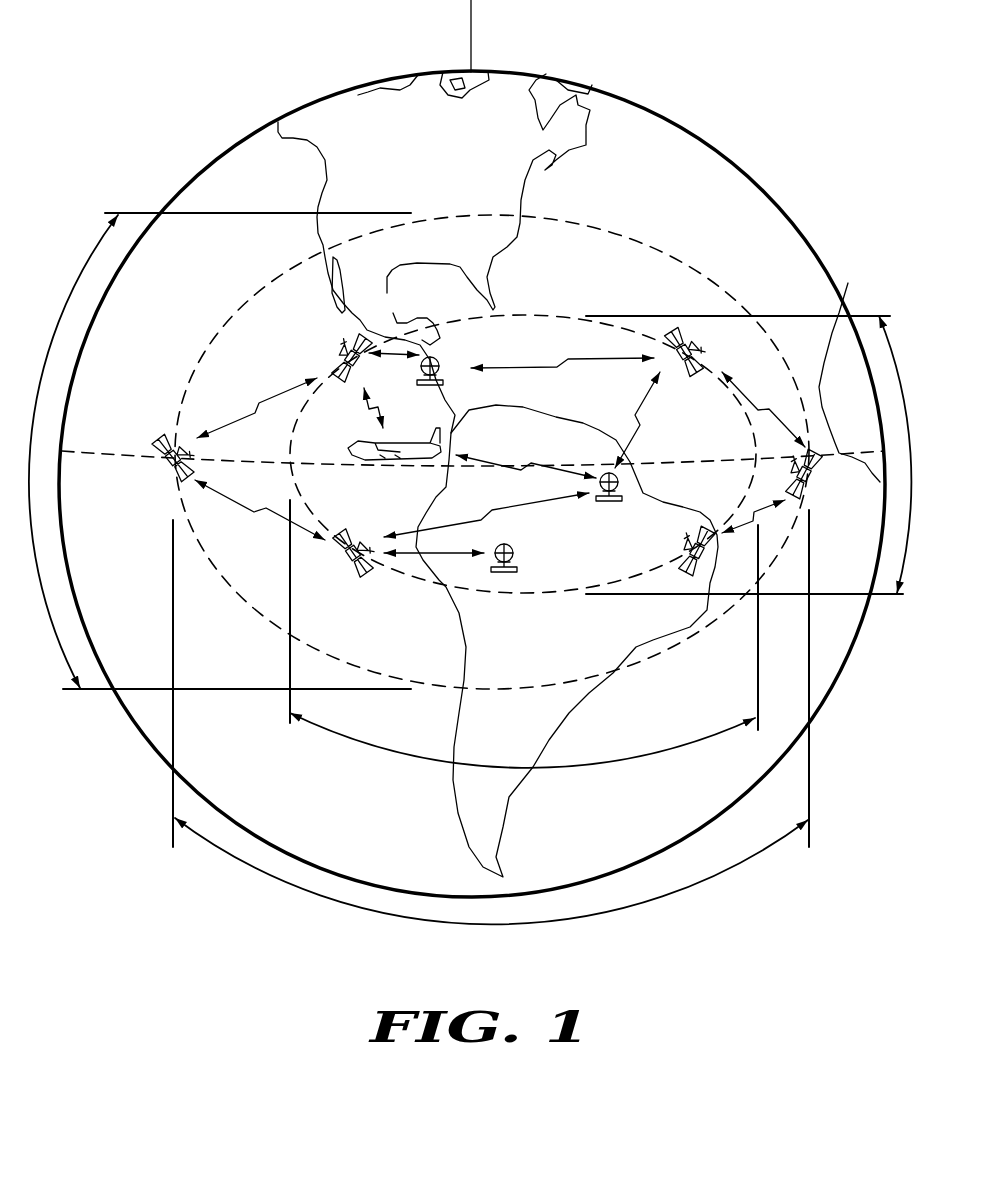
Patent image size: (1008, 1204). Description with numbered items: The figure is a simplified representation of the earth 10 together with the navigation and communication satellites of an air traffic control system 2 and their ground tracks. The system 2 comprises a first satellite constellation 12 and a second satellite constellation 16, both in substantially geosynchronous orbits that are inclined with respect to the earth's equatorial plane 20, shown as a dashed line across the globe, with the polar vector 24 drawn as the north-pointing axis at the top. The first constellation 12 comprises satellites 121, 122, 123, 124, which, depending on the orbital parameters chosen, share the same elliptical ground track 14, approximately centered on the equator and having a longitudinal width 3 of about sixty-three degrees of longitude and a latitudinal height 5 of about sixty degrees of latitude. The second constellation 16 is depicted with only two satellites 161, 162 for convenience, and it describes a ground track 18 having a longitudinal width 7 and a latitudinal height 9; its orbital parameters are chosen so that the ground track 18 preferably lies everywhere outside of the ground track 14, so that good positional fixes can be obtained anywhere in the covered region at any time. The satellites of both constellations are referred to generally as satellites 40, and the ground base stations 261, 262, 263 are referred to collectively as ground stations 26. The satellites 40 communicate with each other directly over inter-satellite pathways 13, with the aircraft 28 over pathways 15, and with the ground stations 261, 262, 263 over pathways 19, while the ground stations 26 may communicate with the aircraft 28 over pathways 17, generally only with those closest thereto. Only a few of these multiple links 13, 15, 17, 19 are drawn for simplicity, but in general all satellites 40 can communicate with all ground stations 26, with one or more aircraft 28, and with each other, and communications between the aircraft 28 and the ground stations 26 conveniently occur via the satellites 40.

The air traffic control (ATC) system 2 is at (320, 978).
The longitudinal width 3 is at (627, 762).
The latitudinal height 5 is at (895, 454).
The longitudinal width 7 is at (703, 880).
The latitudinal height 9 is at (72, 290).
The earth 10 is at (343, 819).
The first satellite constellation 12 is at (387, 587).
The inter-satellite pathways 13 is at (240, 412).
The elliptical ground track 14 is at (540, 592).
The pathways 15 is at (366, 416).
The second satellite constellation 16 is at (212, 589).
The pathways 17 is at (606, 366).
The ground track 18 is at (540, 686).
The pathways 19 is at (400, 366).
The equatorial plane 20 is at (125, 462).
The polar vector 24 is at (473, 45).
The ground stations 26 is at (570, 307).
The aircraft 28 is at (438, 440).
The satellites 40 is at (697, 238).
The satellite 121 is at (341, 566).
The satellite 122 is at (344, 356).
The satellite 123 is at (702, 360).
The satellite 124 is at (676, 551).
The satellite 161 is at (160, 446).
The satellite 162 is at (815, 490).
The ground station 261 is at (440, 368).
The ground station 262 is at (615, 500).
The ground station 263 is at (514, 556).